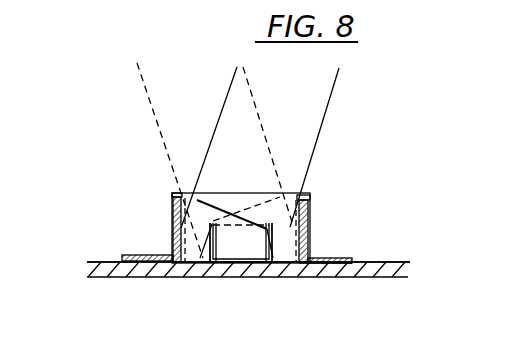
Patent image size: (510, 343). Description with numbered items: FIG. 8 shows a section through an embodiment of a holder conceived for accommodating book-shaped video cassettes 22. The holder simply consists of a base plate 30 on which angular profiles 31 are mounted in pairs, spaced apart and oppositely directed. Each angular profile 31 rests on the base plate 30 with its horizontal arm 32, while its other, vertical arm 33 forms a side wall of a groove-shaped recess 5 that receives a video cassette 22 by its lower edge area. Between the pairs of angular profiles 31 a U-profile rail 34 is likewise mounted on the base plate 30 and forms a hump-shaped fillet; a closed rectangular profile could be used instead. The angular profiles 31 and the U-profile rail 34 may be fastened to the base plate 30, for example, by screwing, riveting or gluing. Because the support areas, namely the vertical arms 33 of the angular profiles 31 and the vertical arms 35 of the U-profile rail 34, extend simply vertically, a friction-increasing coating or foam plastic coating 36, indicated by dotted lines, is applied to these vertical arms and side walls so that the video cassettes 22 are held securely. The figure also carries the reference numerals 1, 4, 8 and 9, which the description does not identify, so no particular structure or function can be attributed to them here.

The sensor arrangement 1 is at (100, 167).
The base plate 4 is at (96, 254).
The groove-shaped recesses 5 is at (200, 214).
The housing side wall 8 is at (280, 265).
The wall cap 9 is at (308, 194).
The video cassettes 22 is at (328, 107).
The base plate 30 is at (387, 265).
The angular profiles 31 is at (307, 250).
The horizontal arms 32 is at (350, 258).
The vertical arms 33 is at (308, 222).
The U-profile rail 34 is at (240, 265).
The vertical arms of the U-profile rail 35 is at (212, 260).
The friction-increasing coating 36 is at (173, 253).